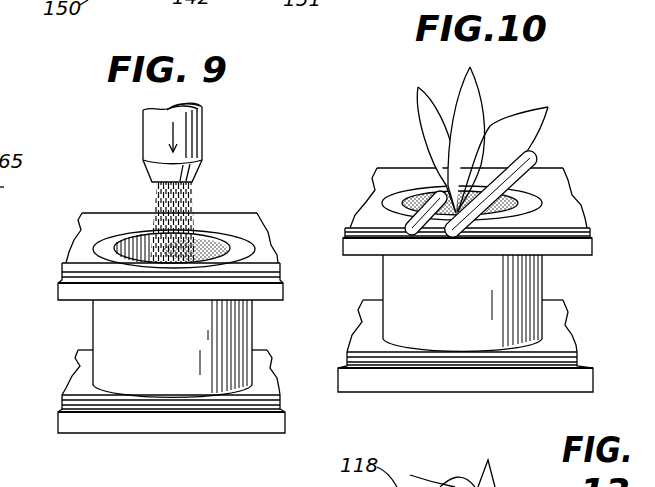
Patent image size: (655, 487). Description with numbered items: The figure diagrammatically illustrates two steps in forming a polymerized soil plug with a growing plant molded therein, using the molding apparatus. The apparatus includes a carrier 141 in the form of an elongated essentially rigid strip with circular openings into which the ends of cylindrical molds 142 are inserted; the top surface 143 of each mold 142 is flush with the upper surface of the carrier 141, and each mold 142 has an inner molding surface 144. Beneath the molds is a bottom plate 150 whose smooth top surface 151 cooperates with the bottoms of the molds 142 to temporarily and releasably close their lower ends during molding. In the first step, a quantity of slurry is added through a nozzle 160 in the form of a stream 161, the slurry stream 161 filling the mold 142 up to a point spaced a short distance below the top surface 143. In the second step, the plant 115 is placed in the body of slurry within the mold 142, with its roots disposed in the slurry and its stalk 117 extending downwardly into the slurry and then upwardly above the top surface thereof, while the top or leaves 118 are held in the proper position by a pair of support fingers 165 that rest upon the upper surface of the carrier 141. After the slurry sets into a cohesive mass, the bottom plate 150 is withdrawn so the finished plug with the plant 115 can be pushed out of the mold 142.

In FIG. 10, the growing plant 115 is at (450, 137).
In FIG. 10, the stalk 117 is at (443, 205).
In FIG. 10, the leaves 118 is at (477, 102).
In FIG. 9, the carrier 141 is at (82, 259).
In FIG. 10, the carrier 141 is at (367, 200).
In FIG. 9, the mold 142 is at (115, 327).
In FIG. 10, the mold 142 is at (407, 282).
In FIG. 10, the top surface 143 is at (530, 205).
In FIG. 9, the inner molding surface 144 is at (128, 242).
In FIG. 9, the bottom plate 150 is at (147, 433).
In FIG. 10, the bottom plate 150 is at (470, 380).
In FIG. 9, the top surface 151 is at (78, 402).
In FIG. 10, the top surface 151 is at (378, 362).
In FIG. 9, the nozzle 160 is at (200, 131).
In FIG. 9, the stream 161 is at (193, 198).
In FIG. 10, the support fingers 165 is at (532, 155).